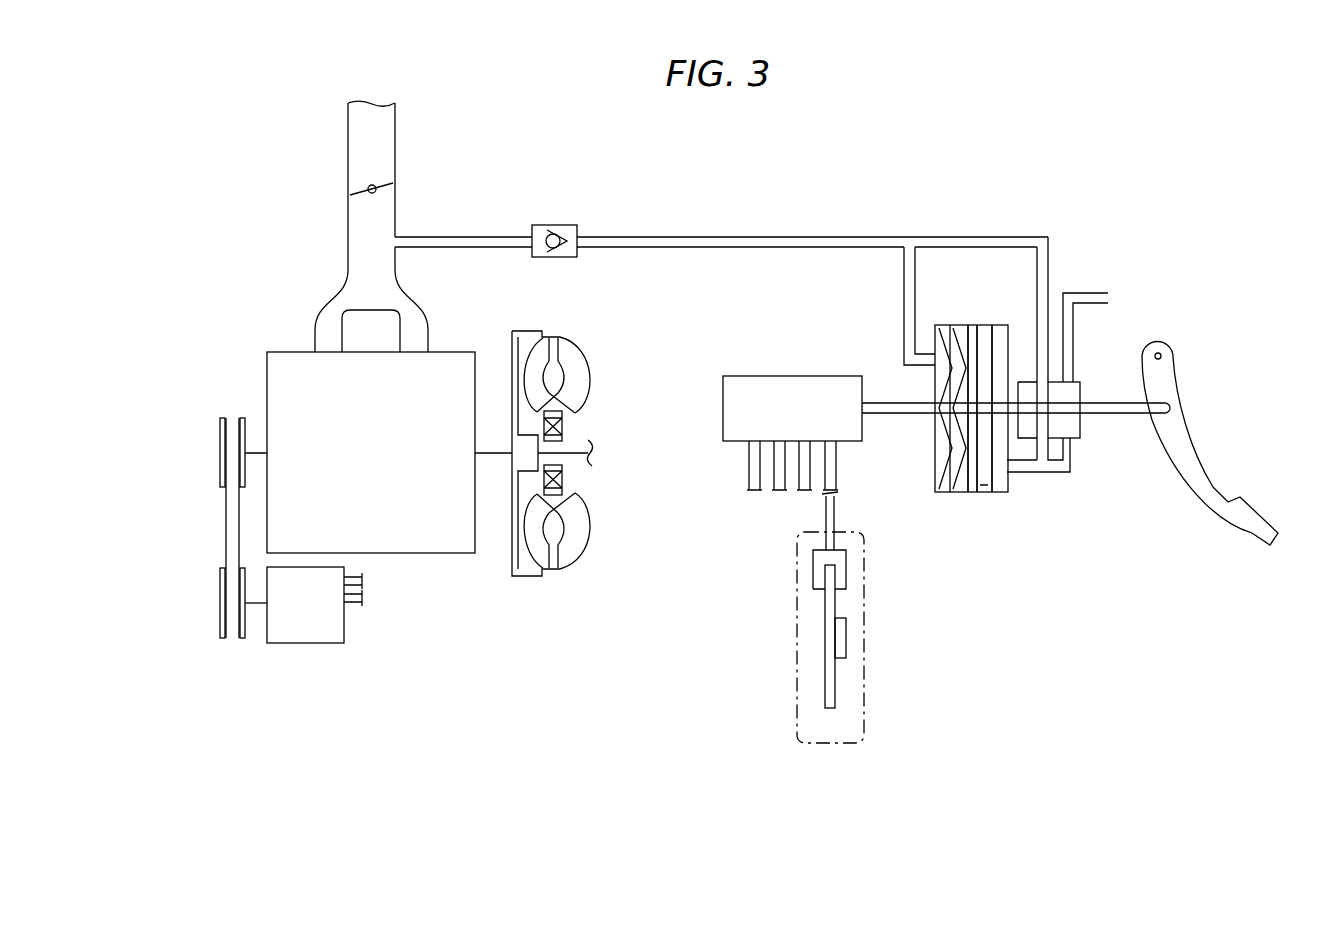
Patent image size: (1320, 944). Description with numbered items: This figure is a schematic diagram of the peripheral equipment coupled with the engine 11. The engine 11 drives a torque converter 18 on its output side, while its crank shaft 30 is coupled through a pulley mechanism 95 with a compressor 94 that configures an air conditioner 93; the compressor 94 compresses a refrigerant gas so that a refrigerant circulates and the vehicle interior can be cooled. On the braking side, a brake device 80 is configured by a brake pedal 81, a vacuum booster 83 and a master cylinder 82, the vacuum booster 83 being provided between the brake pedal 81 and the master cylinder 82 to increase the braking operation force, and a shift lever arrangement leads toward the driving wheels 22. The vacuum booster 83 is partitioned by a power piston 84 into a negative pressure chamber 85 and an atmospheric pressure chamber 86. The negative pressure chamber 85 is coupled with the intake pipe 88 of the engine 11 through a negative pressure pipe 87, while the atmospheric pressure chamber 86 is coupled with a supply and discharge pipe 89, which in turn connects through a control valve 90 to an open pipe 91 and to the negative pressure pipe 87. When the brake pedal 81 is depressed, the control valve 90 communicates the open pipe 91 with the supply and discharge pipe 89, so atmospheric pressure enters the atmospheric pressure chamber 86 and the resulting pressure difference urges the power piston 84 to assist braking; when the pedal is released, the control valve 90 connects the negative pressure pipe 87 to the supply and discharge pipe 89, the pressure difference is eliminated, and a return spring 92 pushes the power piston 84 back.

The engine 11 is at (283, 350).
The intake pipe 88 is at (330, 295).
The negative pressure pipe 87 is at (465, 233).
The crank shaft 30 is at (258, 447).
The torque converter 18 is at (578, 343).
The air conditioner 93 is at (278, 575).
The pulley mechanism 95 is at (228, 537).
The compressor 94 is at (300, 645).
The master cylinder 82 is at (752, 374).
The driving wheels 22 is at (866, 620).
The brake device 80 is at (1070, 411).
The vacuum booster 83 is at (985, 439).
The return spring 92 is at (950, 340).
The negative pressure chamber 85 is at (946, 494).
The power piston 84 is at (983, 336).
The atmospheric pressure chamber 86 is at (1000, 496).
The supply and discharge pipe 89 is at (1048, 478).
The control valve 90 is at (1085, 370).
The open pipe 91 is at (1091, 292).
The brake pedal 81 is at (1205, 470).